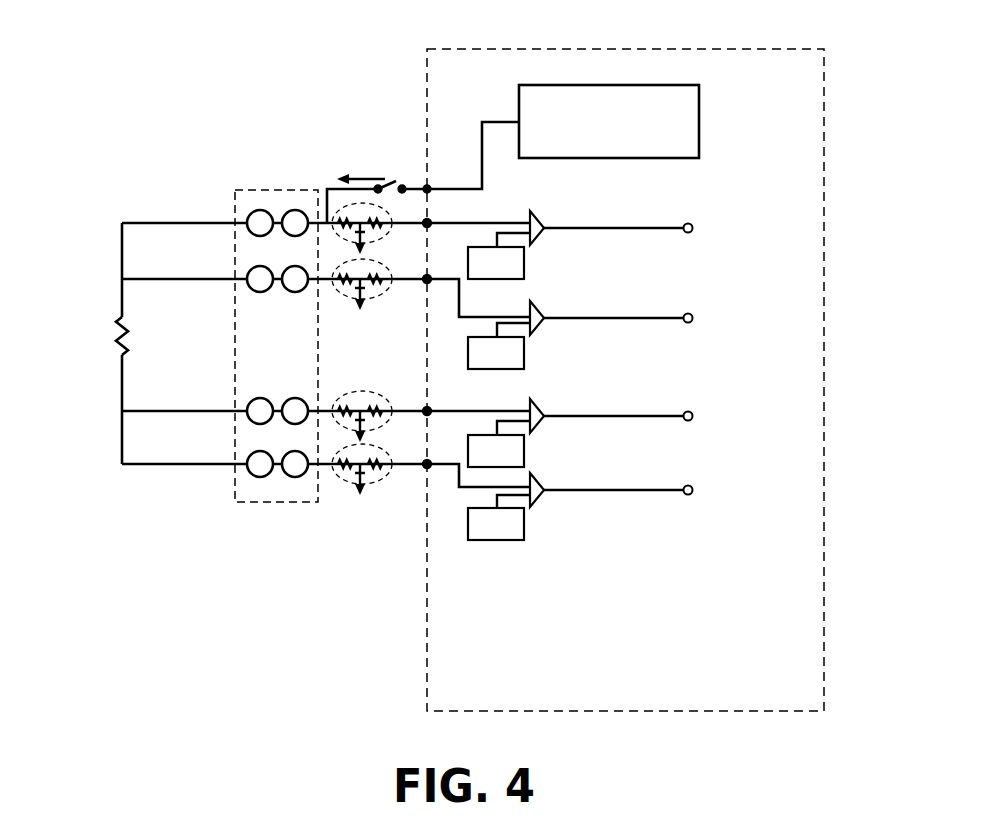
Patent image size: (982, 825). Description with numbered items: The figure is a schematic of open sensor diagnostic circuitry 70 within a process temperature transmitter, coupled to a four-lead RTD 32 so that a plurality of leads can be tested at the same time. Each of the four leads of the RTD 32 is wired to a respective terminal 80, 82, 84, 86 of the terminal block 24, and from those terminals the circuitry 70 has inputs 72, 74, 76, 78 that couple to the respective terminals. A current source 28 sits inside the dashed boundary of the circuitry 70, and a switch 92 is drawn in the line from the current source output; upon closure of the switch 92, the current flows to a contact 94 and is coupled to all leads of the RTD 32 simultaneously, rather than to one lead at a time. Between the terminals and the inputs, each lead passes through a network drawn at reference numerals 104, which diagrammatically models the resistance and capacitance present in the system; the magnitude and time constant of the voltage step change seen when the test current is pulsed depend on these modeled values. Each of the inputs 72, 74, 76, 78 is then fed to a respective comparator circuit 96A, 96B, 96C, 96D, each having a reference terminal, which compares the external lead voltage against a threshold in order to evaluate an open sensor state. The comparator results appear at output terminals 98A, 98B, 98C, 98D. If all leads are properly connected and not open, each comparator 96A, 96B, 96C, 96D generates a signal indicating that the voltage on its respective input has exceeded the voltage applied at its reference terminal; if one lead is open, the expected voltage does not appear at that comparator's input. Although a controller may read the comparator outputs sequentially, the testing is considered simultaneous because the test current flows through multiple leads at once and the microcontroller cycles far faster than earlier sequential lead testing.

The terminal block 24 is at (235, 502).
The current source 28 is at (699, 112).
The RTD 32 is at (103, 358).
The open sensor diagnostic circuitry 70 is at (775, 49).
The input 72 is at (429, 219).
The input 74 is at (429, 275).
The input 76 is at (429, 407).
The input 78 is at (429, 460).
The terminal 80 is at (293, 210).
The terminal 82 is at (283, 268).
The terminal 84 is at (286, 422).
The terminal 86 is at (292, 478).
The switch 92 is at (377, 186).
The switch contact 94 is at (425, 186).
The comparator circuit 96A is at (540, 216).
The comparator circuit 96B is at (540, 306).
The comparator circuit 96C is at (540, 404).
The comparator circuit 96D is at (540, 478).
The output terminal 98A is at (691, 223).
The output terminal 98B is at (691, 313).
The output terminal 98C is at (691, 411).
The output terminal 98D is at (691, 485).
The resistance and capacitance 104 is at (380, 234).